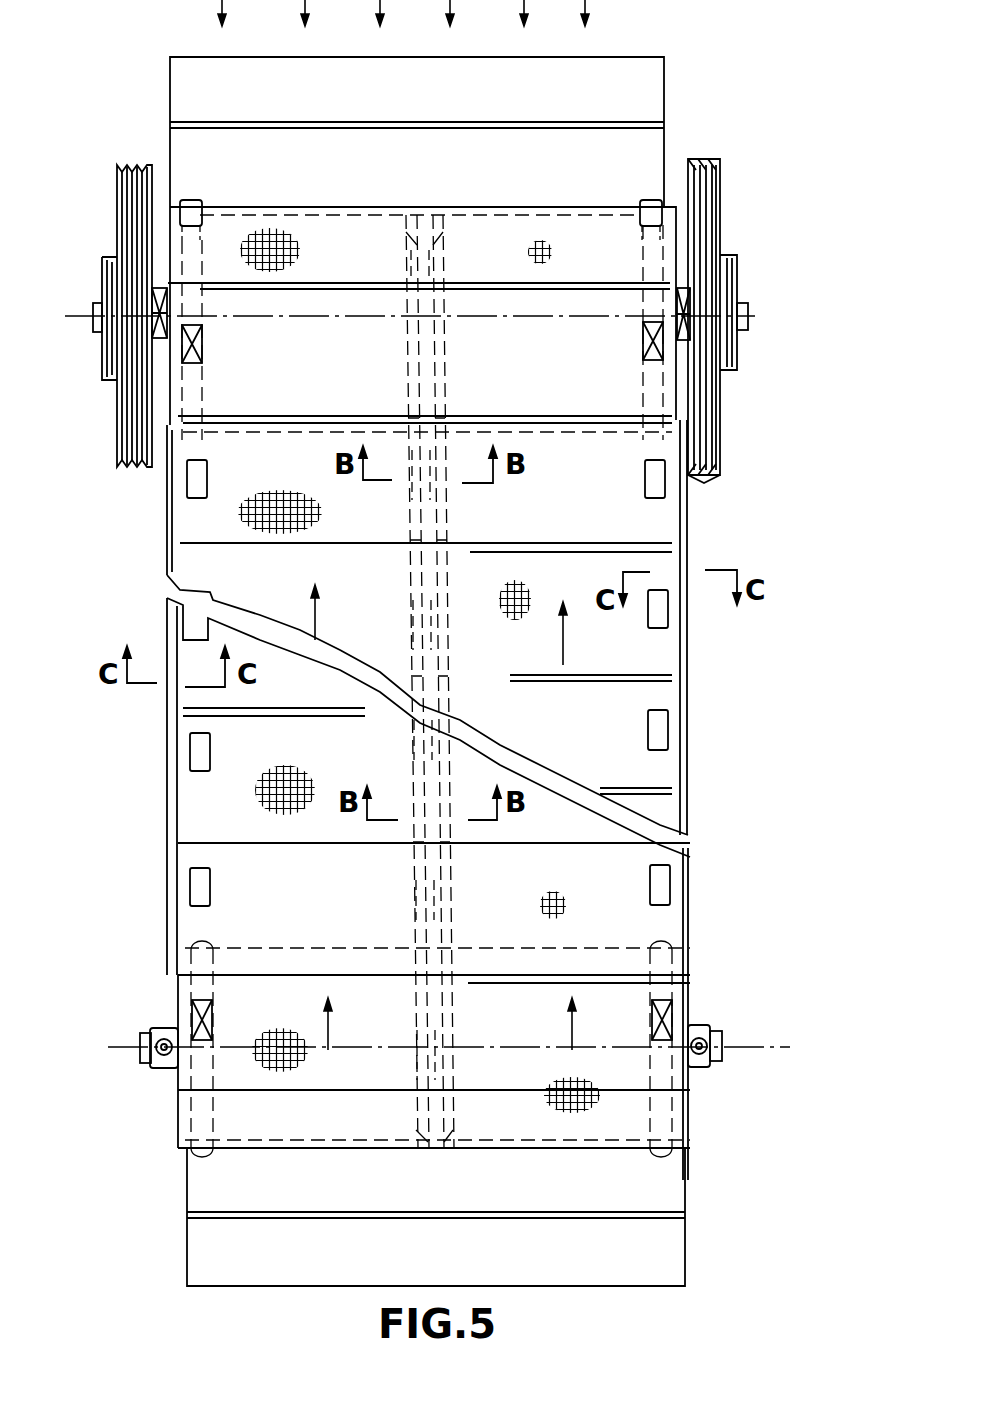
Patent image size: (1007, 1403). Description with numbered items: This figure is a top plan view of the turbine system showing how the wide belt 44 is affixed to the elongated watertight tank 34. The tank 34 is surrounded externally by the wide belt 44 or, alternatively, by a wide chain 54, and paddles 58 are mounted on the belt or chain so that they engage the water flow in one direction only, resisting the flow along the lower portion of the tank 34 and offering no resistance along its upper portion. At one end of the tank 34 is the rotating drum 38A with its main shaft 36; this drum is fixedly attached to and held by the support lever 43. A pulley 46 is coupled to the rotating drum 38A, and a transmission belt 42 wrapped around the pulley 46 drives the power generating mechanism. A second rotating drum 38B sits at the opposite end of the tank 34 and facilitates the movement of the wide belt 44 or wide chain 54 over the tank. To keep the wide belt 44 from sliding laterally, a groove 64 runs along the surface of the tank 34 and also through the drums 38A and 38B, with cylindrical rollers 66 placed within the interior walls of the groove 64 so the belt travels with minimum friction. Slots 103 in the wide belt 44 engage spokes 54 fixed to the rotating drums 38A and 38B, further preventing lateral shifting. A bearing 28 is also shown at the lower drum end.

The bearing 28 is at (705, 1062).
The tank 34 is at (166, 543).
The main shaft 36 is at (748, 318).
The rotating drum 38A is at (168, 252).
The second rotating drum 38B is at (690, 1112).
The transmission belt 42 is at (712, 478).
The support lever 43 is at (682, 348).
The wide belt 44 is at (172, 492).
The pulley 46 is at (738, 262).
The wide chain 54 is at (648, 205).
The paddles 58 is at (660, 140).
The groove 64 is at (445, 352).
The cylindrical rollers 66 is at (416, 556).
The slots 103 is at (668, 738).